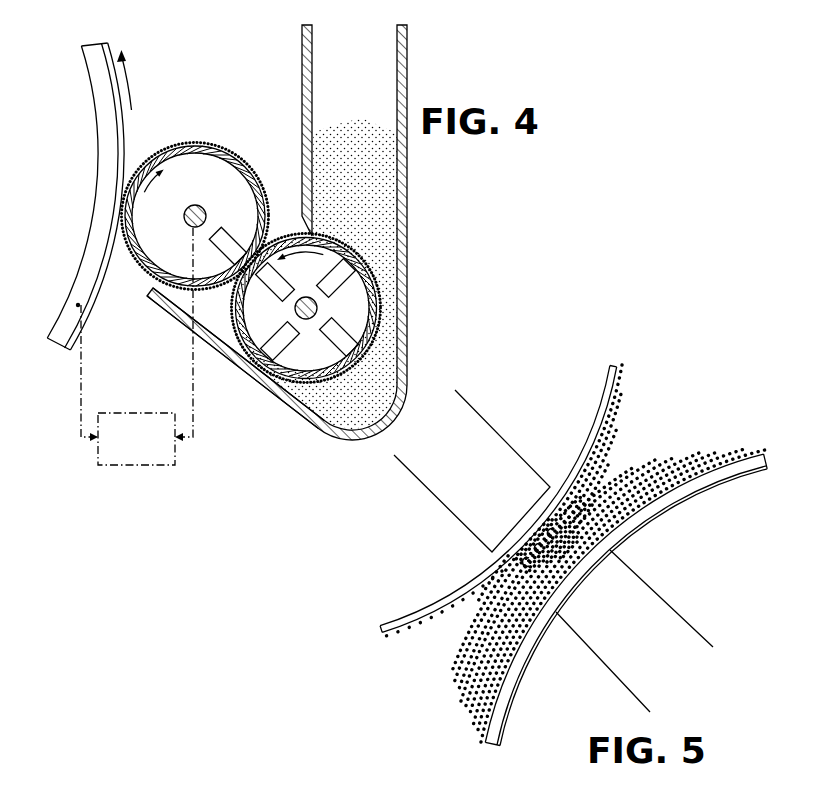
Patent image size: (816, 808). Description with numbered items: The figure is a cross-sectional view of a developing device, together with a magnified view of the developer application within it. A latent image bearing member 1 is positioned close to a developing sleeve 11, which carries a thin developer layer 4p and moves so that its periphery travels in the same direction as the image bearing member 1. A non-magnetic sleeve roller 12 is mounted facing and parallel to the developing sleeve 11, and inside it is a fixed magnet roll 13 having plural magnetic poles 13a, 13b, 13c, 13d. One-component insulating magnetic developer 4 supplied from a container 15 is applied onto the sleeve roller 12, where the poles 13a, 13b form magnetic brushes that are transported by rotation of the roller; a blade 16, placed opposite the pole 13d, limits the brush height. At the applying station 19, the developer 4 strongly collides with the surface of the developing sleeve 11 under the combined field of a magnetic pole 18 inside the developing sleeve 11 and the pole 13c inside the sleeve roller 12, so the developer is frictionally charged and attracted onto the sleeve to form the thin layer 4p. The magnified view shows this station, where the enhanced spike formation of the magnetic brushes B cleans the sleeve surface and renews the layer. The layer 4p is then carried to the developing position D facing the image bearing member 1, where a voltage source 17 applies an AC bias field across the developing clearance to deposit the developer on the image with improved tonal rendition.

In FIG. 4, the latent image bearing member 1 is at (125, 131).
In FIG. 4, the one-component insulating magnetic developer 4 is at (383, 187).
In FIG. 5, the one-component insulating magnetic developer 4 is at (626, 393).
In FIG. 4, the thin developer layer 4p is at (230, 156).
In FIG. 4, the developing sleeve 11 is at (180, 146).
In FIG. 5, the developing sleeve 11 is at (611, 391).
In FIG. 4, the sleeve roller 12 is at (245, 358).
In FIG. 5, the sleeve roller 12 is at (721, 474).
In FIG. 4, the fixed magnet roll 13 is at (306, 308).
In FIG. 4, the magnetic pole 13a is at (345, 330).
In FIG. 4, the magnetic pole 13b is at (327, 270).
In FIG. 4, the magnetic pole 13c is at (268, 296).
In FIG. 5, the magnetic pole 13c is at (643, 593).
In FIG. 4, the magnetic pole 13d is at (288, 347).
In FIG. 4, the container 15 is at (404, 57).
In FIG. 4, the blade 16 is at (303, 165).
In FIG. 4, the voltage source 17 is at (135, 466).
In FIG. 4, the magnetic pole 18 is at (230, 233).
In FIG. 5, the magnetic pole 18 is at (502, 449).
In FIG. 4, the applying station 19 is at (243, 283).
In FIG. 5, the applying station 19 is at (594, 483).
In FIG. 4, the developing position D is at (125, 212).
In FIG. 5, the magnetic brushes B is at (518, 567).